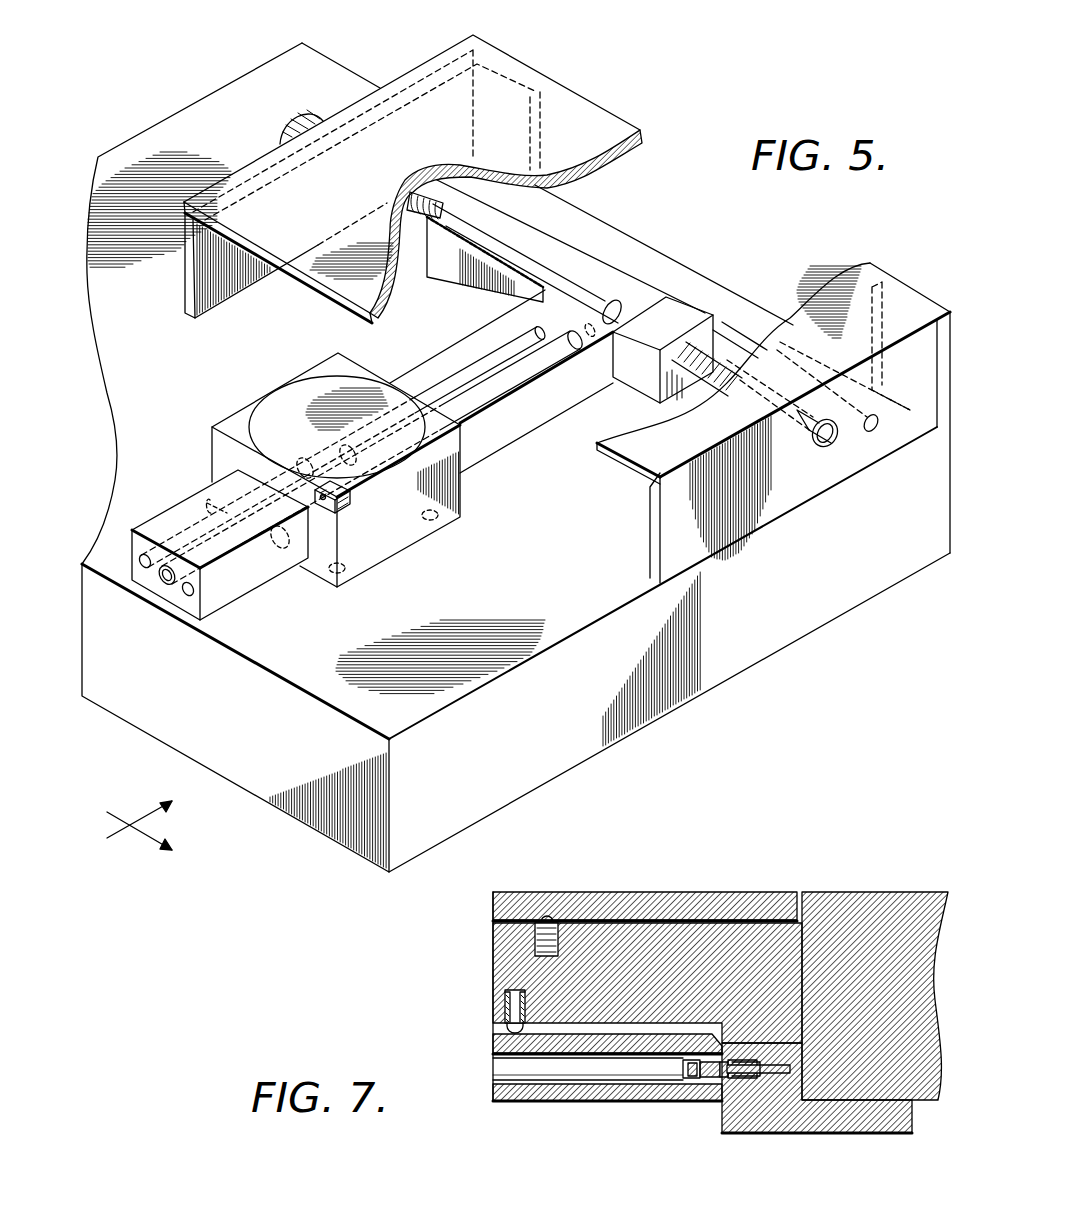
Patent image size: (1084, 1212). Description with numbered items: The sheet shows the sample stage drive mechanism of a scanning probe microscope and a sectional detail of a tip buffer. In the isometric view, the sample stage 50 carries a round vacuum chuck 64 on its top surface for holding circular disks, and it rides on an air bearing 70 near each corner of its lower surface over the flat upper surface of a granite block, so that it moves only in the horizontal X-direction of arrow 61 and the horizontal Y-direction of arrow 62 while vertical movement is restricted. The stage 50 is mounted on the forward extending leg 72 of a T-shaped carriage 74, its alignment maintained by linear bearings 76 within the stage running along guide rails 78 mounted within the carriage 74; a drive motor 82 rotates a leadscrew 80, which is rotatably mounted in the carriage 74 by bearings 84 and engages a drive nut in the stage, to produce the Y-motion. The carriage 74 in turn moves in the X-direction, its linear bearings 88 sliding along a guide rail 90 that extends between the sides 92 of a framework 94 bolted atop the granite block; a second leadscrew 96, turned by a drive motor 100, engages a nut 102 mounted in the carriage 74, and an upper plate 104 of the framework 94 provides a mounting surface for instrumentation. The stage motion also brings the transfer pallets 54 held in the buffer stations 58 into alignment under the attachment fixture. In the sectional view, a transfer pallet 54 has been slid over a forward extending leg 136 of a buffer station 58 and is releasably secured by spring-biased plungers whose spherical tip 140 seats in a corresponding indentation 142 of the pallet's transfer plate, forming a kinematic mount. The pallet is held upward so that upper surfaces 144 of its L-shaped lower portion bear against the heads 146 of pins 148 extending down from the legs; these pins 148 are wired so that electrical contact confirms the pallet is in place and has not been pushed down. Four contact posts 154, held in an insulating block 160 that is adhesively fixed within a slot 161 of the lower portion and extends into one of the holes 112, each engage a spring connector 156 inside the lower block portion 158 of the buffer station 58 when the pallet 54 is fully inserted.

In FIG. 5, the sample stage 50 is at (222, 420).
In FIG. 5, the transfer pallet 54 is at (345, 505).
In FIG. 7, the transfer pallet 54 is at (488, 1077).
In FIG. 5, the buffer station 58 is at (325, 510).
In FIG. 7, the buffer station 58 is at (490, 970).
In FIG. 5, the arrow 61 is at (135, 831).
In FIG. 5, the arrow 62 is at (157, 808).
In FIG. 5, the vacuum chuck 64 is at (345, 372).
In FIG. 5, the air bearing 70 is at (436, 525).
In FIG. 5, the forward extending leg 72 is at (217, 600).
In FIG. 5, the carriage 74 is at (478, 472).
In FIG. 5, the linear bearings 76 is at (305, 410).
In FIG. 5, the guide rails 78 is at (452, 378).
In FIG. 5, the leadscrew 80 is at (578, 352).
In FIG. 5, the drive motor 82 is at (172, 605).
In FIG. 5, the bearings 84 is at (215, 508).
In FIG. 5, the linear bearings 88 is at (520, 208).
In FIG. 5, the guide rail 90 is at (758, 352).
In FIG. 5, the sides 92 is at (884, 332).
In FIG. 5, the framework 94 is at (927, 300).
In FIG. 5, the leadscrew 96 is at (737, 335).
In FIG. 5, the drive motor 100 is at (312, 112).
In FIG. 5, the nut 102 is at (618, 310).
In FIG. 5, the upper plate 104 is at (643, 133).
In FIG. 7, the holes 112 is at (558, 1056).
In FIG. 7, the forward extending leg 136 is at (493, 947).
In FIG. 7, the spherical tip 140 is at (540, 919).
In FIG. 7, the indentation 142 is at (550, 917).
In FIG. 7, the upper surfaces 144 is at (558, 1037).
In FIG. 7, the heads 146 is at (493, 1038).
In FIG. 7, the pins 148 is at (505, 1013).
In FIG. 7, the contact posts 154 is at (710, 1080).
In FIG. 7, the spring connector 156 is at (785, 1073).
In FIG. 7, the lower block portion 158 is at (850, 1133).
In FIG. 7, the insulating block 160 is at (693, 1090).
In FIG. 7, the slot 161 is at (683, 1072).